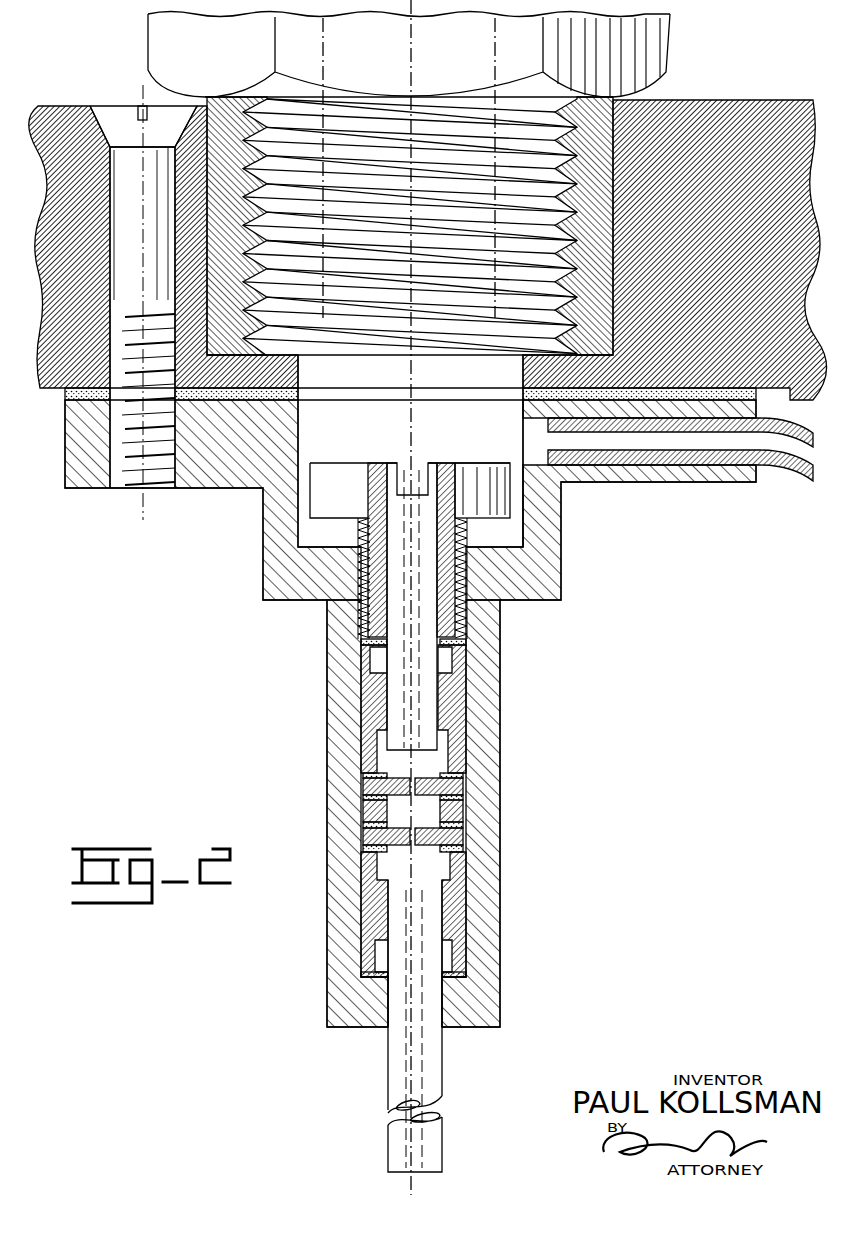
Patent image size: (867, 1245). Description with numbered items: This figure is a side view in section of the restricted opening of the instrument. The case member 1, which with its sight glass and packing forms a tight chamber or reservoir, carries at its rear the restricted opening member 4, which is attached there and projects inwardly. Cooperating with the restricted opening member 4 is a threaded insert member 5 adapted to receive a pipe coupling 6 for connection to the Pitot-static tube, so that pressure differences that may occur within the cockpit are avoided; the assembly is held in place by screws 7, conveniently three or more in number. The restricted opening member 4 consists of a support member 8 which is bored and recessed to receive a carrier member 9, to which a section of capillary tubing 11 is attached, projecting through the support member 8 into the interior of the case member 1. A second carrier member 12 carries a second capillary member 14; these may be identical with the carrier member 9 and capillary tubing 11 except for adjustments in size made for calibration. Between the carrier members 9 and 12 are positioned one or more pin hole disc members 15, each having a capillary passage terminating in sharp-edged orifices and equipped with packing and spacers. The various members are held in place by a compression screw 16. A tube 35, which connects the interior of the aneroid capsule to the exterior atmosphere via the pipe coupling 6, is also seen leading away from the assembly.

The case member 1 is at (751, 100).
The restricted opening member 4 is at (510, 763).
The threaded insert member 5 is at (620, 100).
The pipe coupling 6 is at (658, 48).
The screws 7 is at (115, 113).
The support member 8 is at (410, 691).
The carrier member 9 is at (457, 918).
The capillary tubing 11 is at (435, 1070).
The second carrier member 12 is at (453, 697).
The second capillary member 14 is at (423, 743).
The pin hole disc members 15 is at (457, 837).
The compression screw 16 is at (461, 530).
The tube 35 is at (786, 465).